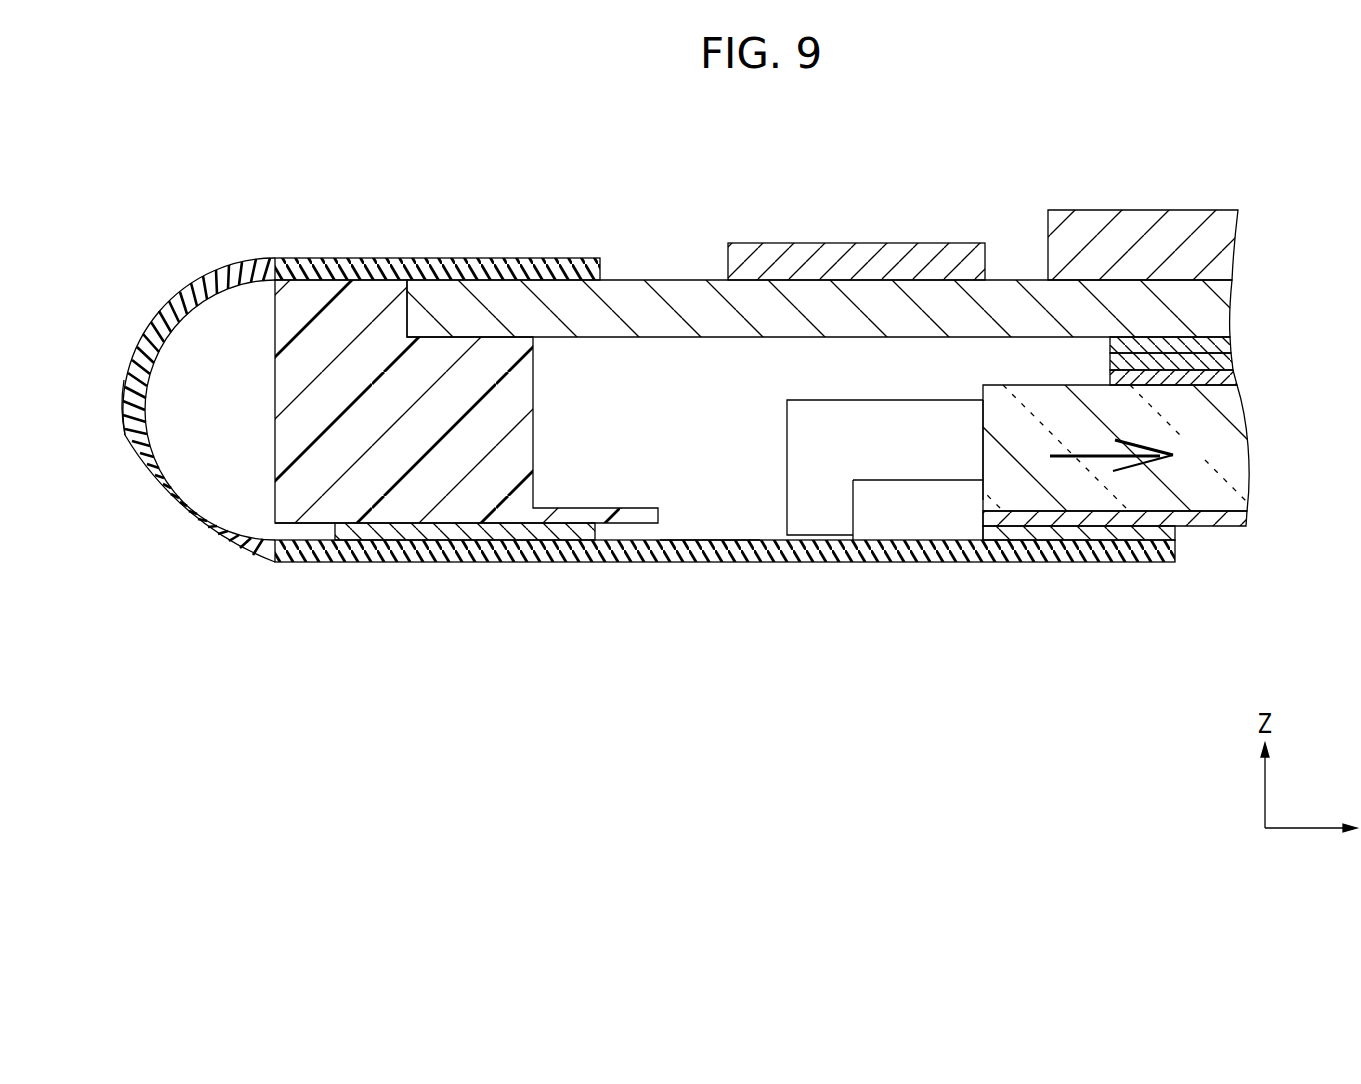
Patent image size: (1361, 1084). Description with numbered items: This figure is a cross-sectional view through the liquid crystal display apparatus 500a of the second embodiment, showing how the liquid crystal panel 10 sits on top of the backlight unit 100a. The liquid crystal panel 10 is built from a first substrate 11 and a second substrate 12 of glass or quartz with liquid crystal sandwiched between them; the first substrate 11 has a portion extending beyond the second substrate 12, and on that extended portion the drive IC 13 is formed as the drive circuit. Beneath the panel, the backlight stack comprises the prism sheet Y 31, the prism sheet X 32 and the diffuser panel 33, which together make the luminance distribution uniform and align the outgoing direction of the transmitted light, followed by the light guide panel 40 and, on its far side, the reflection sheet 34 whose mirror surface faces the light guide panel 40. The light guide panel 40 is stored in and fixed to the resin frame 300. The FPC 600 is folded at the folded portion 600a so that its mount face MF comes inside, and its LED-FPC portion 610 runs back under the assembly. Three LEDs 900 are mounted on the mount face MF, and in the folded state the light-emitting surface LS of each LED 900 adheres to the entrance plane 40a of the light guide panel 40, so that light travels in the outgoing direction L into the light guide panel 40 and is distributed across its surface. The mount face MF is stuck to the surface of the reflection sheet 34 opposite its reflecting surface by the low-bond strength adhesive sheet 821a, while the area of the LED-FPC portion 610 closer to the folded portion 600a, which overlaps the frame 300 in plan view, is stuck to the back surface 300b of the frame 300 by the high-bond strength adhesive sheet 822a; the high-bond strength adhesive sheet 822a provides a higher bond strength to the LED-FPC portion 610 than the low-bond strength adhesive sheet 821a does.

The liquid crystal display apparatus 500a is at (438, 163).
The FPC 600 is at (220, 277).
The folded portion 600a is at (130, 445).
The LED-FPC portion 610 is at (755, 562).
The mount face MF is at (708, 540).
The frame 300 is at (385, 513).
The back surface of the frame 300b is at (302, 524).
The high-bond strength adhesive sheet 822a is at (495, 532).
The liquid crystal panel 10 is at (909, 203).
The first substrate 11 is at (1225, 317).
The second substrate 12 is at (1226, 237).
The drive IC 13 is at (778, 245).
The prism sheet Y 31 is at (1227, 343).
The prism sheet X 32 is at (1232, 362).
The diffuser panel 33 is at (1237, 377).
The reflection sheet 34 is at (1240, 520).
The light guide panel 40 is at (1248, 470).
The entrance plane 40a is at (982, 447).
The outgoing direction of light L is at (1124, 455).
The light-emitting surface LS is at (985, 468).
The low-bond strength adhesive sheet 821a is at (1137, 537).
The LED 900 is at (880, 465).
The backlight unit 100a is at (977, 590).